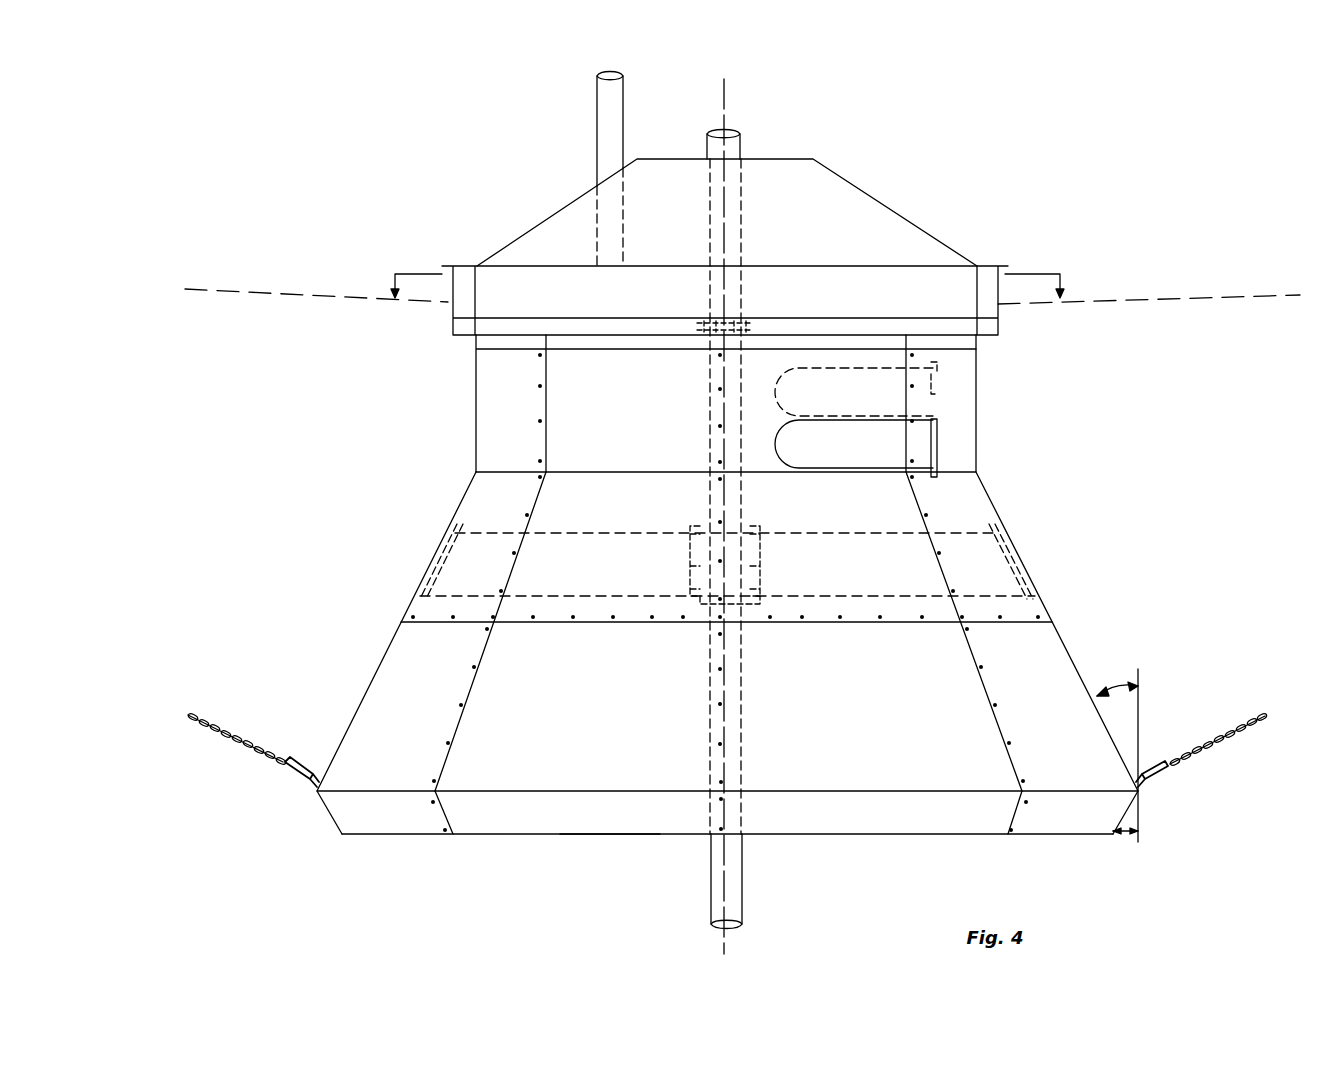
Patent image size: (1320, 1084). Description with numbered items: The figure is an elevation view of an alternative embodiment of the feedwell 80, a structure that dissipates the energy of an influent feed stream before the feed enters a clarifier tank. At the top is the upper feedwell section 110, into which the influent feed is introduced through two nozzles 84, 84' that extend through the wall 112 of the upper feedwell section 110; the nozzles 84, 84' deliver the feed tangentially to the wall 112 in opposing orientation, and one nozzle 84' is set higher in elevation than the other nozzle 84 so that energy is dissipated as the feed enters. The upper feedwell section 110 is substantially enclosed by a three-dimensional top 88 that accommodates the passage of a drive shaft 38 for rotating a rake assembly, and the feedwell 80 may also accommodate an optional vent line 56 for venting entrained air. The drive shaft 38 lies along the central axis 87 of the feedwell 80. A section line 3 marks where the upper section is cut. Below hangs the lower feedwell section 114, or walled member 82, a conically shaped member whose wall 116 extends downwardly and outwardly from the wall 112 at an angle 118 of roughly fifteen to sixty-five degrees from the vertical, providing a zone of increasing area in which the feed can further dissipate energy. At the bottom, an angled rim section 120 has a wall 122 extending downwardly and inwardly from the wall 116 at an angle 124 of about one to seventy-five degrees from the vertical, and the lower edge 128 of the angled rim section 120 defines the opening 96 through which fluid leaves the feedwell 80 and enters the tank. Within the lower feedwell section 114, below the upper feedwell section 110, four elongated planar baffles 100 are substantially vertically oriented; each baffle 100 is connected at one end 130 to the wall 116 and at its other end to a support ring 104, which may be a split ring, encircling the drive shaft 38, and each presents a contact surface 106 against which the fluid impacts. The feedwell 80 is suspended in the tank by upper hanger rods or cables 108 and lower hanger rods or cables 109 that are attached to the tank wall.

The section line 3- 3 is at (729, 286).
The drive shaft 38 is at (734, 149).
The vent line 56 is at (608, 125).
The feedwell 80 is at (285, 425).
The walled member 82 is at (323, 686).
The nozzle 84 is at (901, 448).
The nozzle 84' is at (908, 387).
The central axis 87 is at (723, 82).
The three-dimensional top 88 is at (483, 222).
The opening 96 is at (609, 847).
The baffle 100 is at (465, 573).
The support ring 104 is at (748, 553).
The contact surface 106 is at (606, 558).
The upper hanger rods or cables 108 is at (315, 298).
The lower hanger rods or cables 109 is at (234, 742).
The upper feedwell section 110 is at (505, 431).
The wall 112 is at (976, 410).
The lower feedwell section 114 is at (1068, 645).
The wall 116 is at (421, 696).
The angle 118 is at (1110, 685).
The angled rim section 120 is at (526, 812).
The wall 122 is at (330, 820).
The angle 124 is at (1120, 833).
The lower edge 128 is at (882, 838).
The end 130 is at (443, 543).